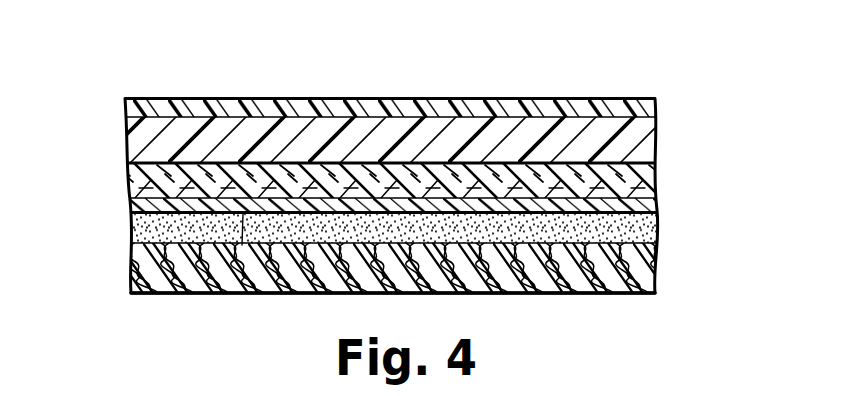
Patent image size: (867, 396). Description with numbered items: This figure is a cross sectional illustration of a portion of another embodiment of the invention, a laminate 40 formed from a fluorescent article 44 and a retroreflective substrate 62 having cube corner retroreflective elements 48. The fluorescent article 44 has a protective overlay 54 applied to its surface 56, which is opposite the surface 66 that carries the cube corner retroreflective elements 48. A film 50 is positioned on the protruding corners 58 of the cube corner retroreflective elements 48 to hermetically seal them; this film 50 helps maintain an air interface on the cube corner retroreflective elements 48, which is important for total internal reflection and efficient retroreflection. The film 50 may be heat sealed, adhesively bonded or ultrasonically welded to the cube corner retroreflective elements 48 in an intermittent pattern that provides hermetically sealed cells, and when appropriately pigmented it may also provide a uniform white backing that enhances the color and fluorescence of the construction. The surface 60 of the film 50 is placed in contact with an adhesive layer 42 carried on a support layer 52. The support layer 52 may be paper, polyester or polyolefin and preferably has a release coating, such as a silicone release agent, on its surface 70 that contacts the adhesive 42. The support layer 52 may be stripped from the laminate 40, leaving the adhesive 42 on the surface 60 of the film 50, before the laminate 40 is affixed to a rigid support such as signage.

The laminate 40 is at (397, 179).
The adhesive layer 42 is at (657, 233).
The fluorescent article 44 is at (627, 142).
The cube corner retroreflective elements 48 is at (128, 188).
The film 50 is at (640, 208).
The support layer 52 is at (627, 277).
The protective overlay 54 is at (145, 103).
The surface 56 is at (196, 105).
The protruding corners 58 is at (243, 199).
The surface 60 is at (242, 245).
The retroreflective substrate 62 is at (657, 182).
The surface 66 is at (133, 170).
The surface 70 is at (607, 268).